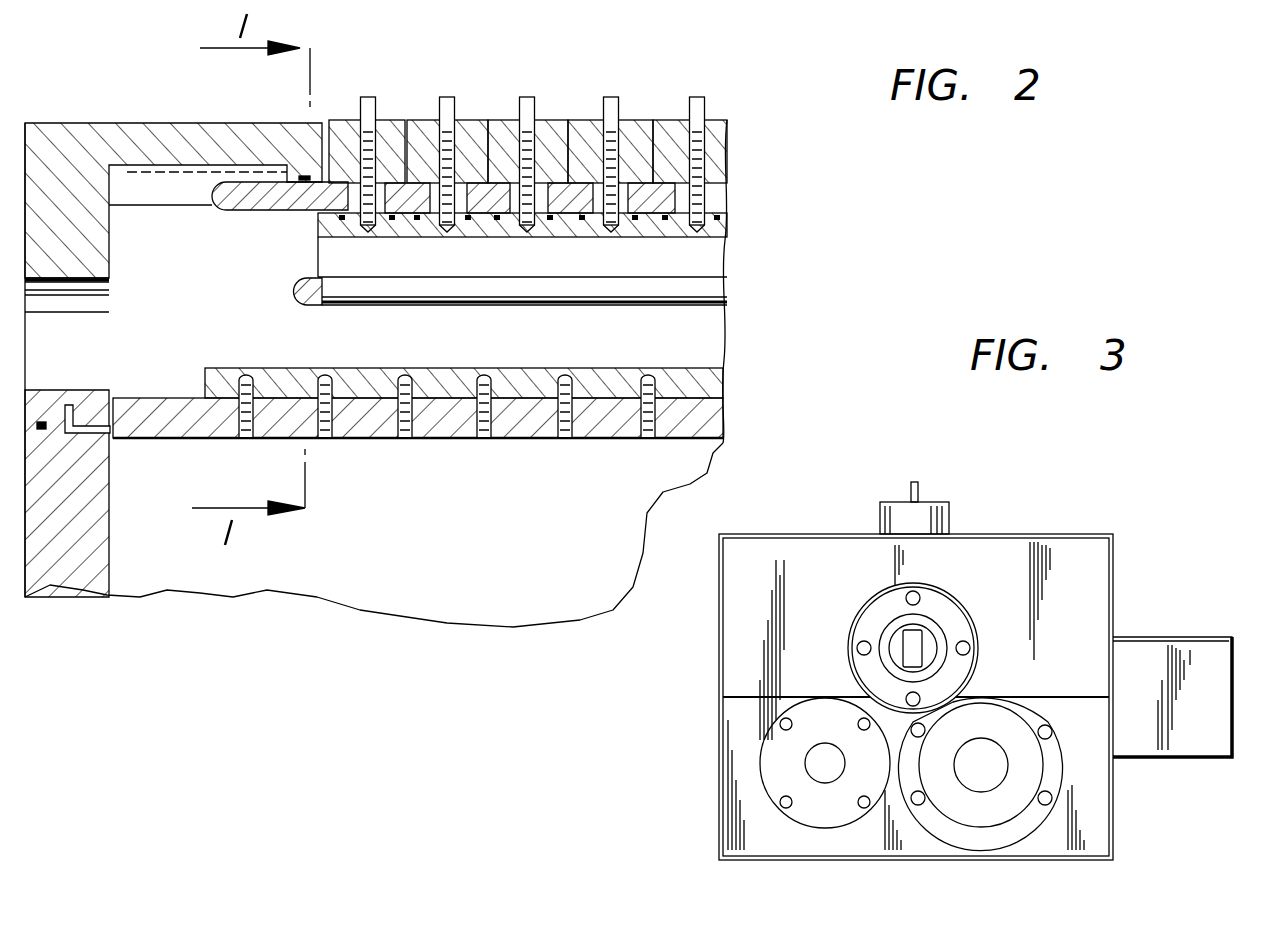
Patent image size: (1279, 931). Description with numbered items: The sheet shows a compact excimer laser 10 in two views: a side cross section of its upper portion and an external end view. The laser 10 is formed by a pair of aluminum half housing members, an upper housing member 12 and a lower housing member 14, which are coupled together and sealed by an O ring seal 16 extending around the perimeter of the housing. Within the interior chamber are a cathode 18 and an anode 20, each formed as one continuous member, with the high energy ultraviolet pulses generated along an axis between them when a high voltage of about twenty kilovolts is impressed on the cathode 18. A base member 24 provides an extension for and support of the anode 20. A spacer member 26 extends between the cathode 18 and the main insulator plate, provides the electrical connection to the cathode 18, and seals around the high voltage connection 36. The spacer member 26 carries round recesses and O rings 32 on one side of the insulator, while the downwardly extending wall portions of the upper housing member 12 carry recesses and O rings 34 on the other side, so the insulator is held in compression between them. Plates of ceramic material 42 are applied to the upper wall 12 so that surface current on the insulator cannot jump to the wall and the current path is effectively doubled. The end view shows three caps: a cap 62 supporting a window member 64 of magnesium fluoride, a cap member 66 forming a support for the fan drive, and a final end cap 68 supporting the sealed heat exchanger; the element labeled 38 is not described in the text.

In FIG. 2, the excimer laser 10 is at (552, 53).
In FIG. 3, the excimer laser 10 is at (1046, 507).
In FIG. 3, the upper housing member 12 is at (1095, 573).
In FIG. 2, the lower housing member 14 is at (374, 375).
In FIG. 2, the O ring seal 16 is at (42, 428).
In FIG. 2, the cathode 18 is at (568, 290).
In FIG. 2, the anode 20 is at (208, 380).
In FIG. 2, the base member 24 is at (605, 430).
In FIG. 2, the spacer member 26 is at (320, 228).
In FIG. 2, the O rings 32 is at (500, 222).
In FIG. 2, the O rings 34 is at (308, 176).
In FIG. 3, the high voltage connection 36 is at (918, 490).
In FIG. 3, the fitting 38 is at (946, 522).
In FIG. 2, the plates of ceramic material 42 is at (440, 122).
In FIG. 3, the window cap 62 is at (952, 580).
In FIG. 3, the window member 64 is at (917, 647).
In FIG. 3, the fan drive cap member 66 is at (1053, 750).
In FIG. 3, the heat exchanger end cap 68 is at (778, 752).